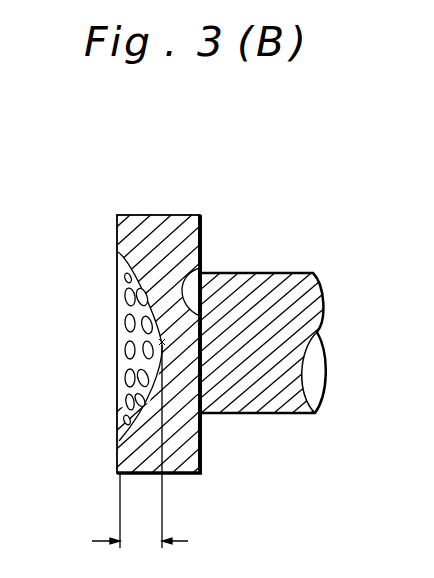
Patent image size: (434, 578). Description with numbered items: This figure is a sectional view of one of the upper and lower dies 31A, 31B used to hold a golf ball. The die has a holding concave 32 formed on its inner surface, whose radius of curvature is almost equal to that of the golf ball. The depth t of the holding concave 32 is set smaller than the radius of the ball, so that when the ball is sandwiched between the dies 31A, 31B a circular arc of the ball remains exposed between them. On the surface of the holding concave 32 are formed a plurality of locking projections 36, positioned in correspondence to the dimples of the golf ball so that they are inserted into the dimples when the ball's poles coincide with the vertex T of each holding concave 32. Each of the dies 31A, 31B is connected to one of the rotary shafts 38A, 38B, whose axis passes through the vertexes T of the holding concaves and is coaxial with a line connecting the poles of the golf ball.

The upper die 31A is at (227, 311).
The lower die 31B is at (163, 217).
The holding concave 32 is at (117, 273).
The locking projections 36 is at (120, 422).
The rotary shaft 38A is at (300, 386).
The rotary shaft 38B is at (277, 413).
The vertex of the holding concave T is at (205, 263).
The depth of the holding concave t is at (140, 446).